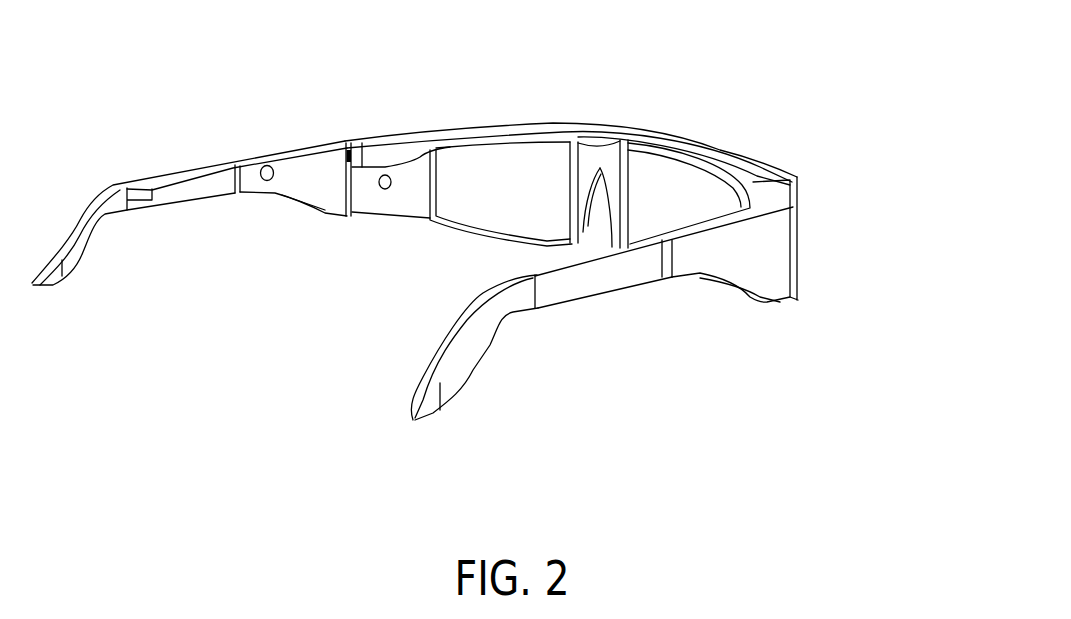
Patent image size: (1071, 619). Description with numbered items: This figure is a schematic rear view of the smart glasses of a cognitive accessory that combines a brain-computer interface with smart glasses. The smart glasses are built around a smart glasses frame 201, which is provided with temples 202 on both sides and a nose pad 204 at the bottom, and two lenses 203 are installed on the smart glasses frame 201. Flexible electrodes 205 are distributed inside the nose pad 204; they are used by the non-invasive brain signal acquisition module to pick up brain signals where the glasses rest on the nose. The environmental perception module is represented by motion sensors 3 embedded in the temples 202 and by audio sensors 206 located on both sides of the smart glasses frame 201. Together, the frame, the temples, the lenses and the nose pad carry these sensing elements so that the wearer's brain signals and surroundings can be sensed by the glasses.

The motion sensors 3 is at (266, 170).
The smart glasses frame 201 is at (765, 163).
The temples 202 is at (703, 250).
The lenses 203 is at (658, 178).
The nose pad 204 is at (598, 172).
The flexible electrodes 205 is at (583, 197).
The audio sensors 206 is at (381, 178).